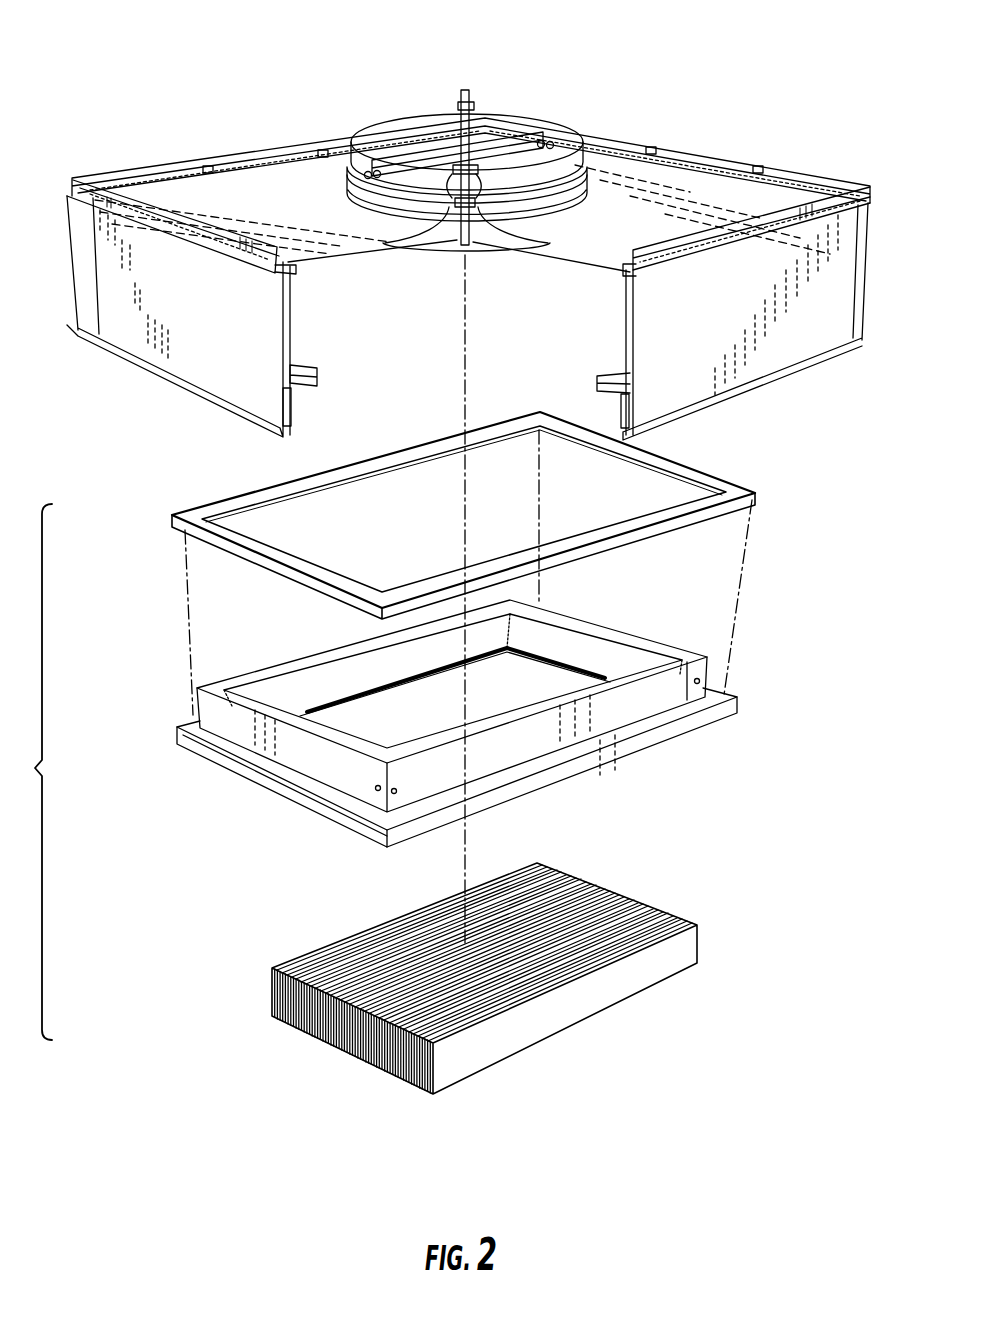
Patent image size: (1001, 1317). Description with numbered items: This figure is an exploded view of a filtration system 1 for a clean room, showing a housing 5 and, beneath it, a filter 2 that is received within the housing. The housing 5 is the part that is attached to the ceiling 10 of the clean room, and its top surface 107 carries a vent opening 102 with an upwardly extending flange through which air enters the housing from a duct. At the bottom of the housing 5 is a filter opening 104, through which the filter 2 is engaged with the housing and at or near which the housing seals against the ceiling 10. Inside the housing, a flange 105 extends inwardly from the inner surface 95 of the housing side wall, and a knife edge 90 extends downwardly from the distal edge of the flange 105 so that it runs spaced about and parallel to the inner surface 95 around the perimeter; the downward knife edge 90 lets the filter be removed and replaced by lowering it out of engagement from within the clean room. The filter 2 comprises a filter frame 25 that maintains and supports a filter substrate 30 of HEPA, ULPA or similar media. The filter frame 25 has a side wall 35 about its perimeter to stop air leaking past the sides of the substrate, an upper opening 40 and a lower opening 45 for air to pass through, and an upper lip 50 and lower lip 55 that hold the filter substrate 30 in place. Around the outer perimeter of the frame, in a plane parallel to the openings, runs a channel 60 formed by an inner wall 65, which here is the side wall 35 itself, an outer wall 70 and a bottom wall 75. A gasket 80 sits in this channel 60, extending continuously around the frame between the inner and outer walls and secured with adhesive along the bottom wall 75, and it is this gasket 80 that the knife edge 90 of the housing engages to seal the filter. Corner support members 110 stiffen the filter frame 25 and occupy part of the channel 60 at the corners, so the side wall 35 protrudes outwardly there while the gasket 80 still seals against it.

The filtration system 1 is at (67, 21).
The filter 2 is at (35, 772).
The housing 5 is at (742, 158).
The ceiling 10 is at (833, 280).
The filter frame 25 is at (693, 627).
The filter substrate 30 is at (703, 940).
The side wall 35 is at (228, 720).
The upper opening 40 is at (530, 613).
The lower opening 45 is at (533, 687).
The upper lip 50 is at (250, 672).
The lower lip 55 is at (340, 700).
The channel 60 is at (738, 693).
The inner wall 65 is at (237, 743).
The outer wall 70 is at (187, 740).
The bottom wall 75 is at (703, 730).
The gasket 80 is at (740, 492).
The knife edge 90 is at (323, 390).
The inner surface 95 is at (322, 260).
The vent opening 102 is at (402, 143).
The filter opening 104 is at (210, 415).
The flange 105 is at (290, 370).
The top surface 107 is at (633, 163).
The corner support members 110 is at (377, 800).